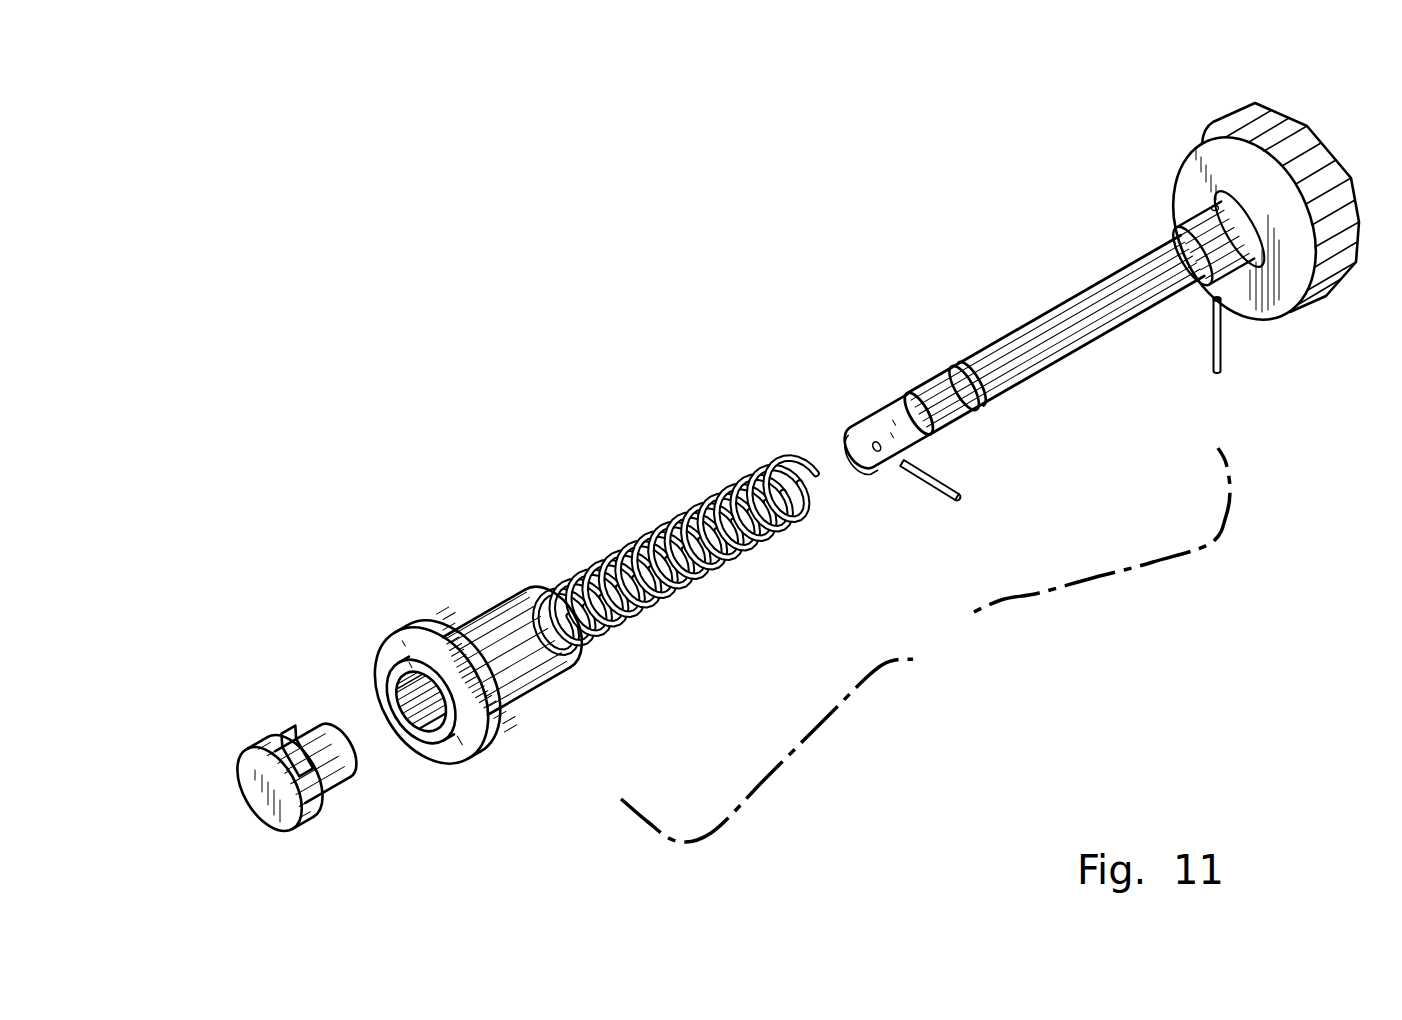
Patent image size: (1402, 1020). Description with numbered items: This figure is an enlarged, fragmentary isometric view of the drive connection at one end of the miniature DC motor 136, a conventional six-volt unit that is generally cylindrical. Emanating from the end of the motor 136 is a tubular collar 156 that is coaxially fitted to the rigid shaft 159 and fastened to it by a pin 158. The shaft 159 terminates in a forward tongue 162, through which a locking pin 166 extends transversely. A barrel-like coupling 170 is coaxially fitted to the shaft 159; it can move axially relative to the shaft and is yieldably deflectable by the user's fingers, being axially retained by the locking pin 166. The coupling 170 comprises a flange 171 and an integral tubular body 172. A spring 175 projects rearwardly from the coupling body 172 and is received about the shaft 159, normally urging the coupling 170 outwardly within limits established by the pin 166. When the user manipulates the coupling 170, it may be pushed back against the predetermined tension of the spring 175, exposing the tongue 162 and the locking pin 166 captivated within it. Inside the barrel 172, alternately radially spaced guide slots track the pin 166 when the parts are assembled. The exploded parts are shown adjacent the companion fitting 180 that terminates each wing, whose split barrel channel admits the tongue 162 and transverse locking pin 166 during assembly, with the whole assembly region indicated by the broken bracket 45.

The housing 45 is at (966, 616).
The motor 136 is at (1232, 126).
The tubular collar 156 is at (1212, 207).
The pin 158 is at (1213, 358).
The rigid shaft 159 is at (1040, 322).
The forward tongue 162 is at (923, 385).
The locking pin 166 is at (905, 461).
The coupling 170 is at (517, 705).
The flange 171 is at (414, 632).
The tubular body 172 is at (519, 637).
The spring 175 is at (683, 513).
The companion fitting 180 is at (226, 815).